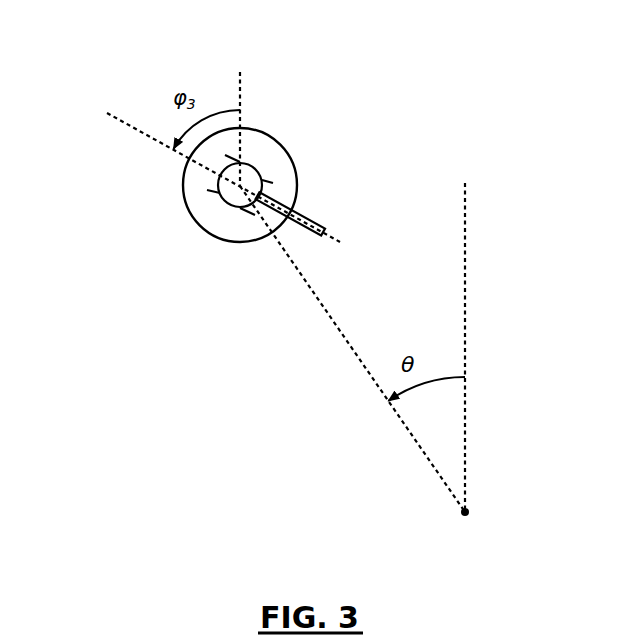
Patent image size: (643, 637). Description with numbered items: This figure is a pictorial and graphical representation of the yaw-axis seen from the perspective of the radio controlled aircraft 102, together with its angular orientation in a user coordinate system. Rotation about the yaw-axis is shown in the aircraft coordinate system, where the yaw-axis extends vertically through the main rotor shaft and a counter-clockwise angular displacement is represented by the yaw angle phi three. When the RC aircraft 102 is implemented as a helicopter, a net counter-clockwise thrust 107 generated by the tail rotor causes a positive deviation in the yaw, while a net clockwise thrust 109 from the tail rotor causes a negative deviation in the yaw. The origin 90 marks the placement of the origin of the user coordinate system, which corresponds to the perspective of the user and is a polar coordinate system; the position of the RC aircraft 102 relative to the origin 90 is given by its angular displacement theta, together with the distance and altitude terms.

The radio controlled aircraft 102 is at (330, 152).
The net counter-clockwise thrust 107 is at (321, 219).
The net clockwise thrust 109 is at (315, 239).
The origin 90 is at (478, 512).